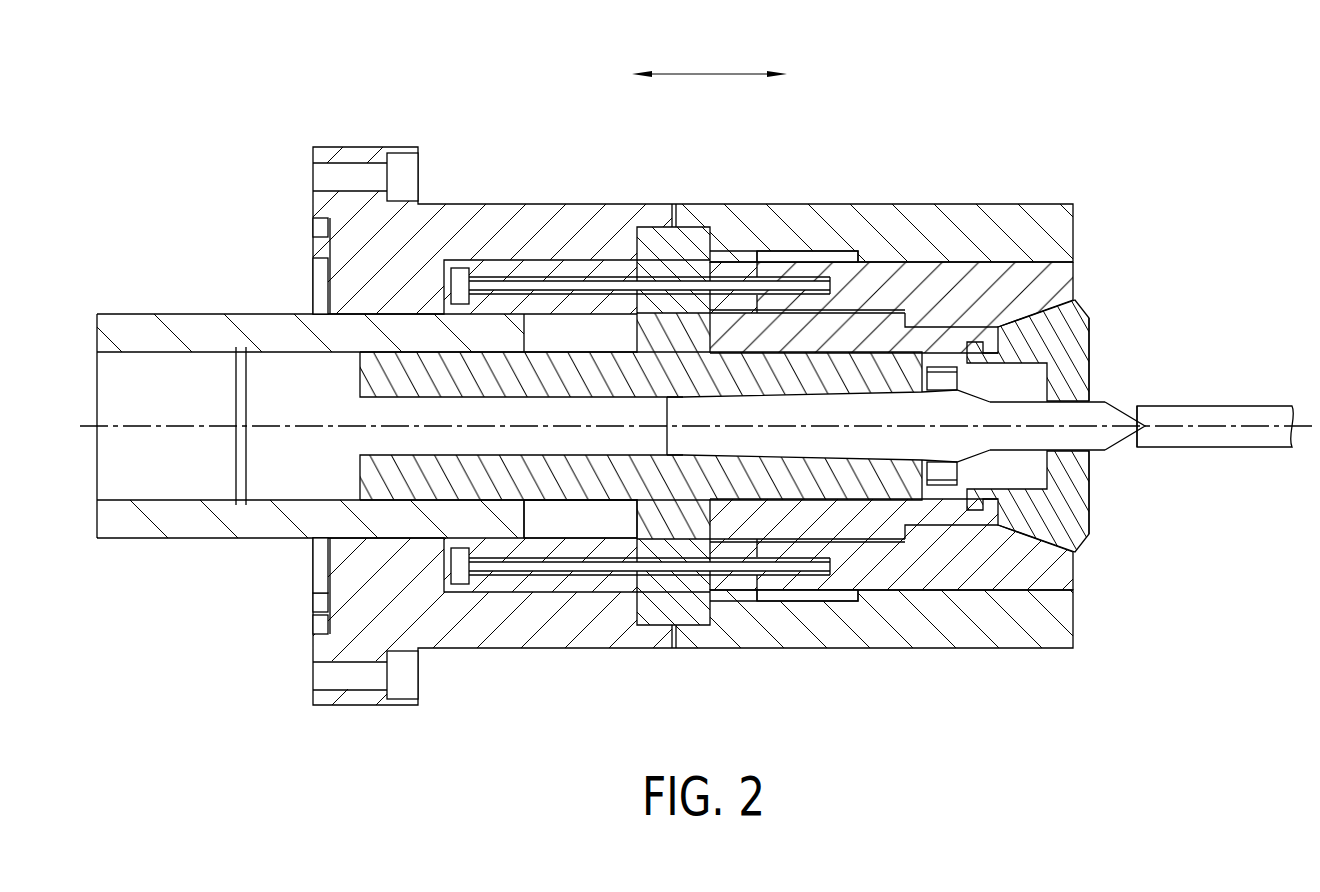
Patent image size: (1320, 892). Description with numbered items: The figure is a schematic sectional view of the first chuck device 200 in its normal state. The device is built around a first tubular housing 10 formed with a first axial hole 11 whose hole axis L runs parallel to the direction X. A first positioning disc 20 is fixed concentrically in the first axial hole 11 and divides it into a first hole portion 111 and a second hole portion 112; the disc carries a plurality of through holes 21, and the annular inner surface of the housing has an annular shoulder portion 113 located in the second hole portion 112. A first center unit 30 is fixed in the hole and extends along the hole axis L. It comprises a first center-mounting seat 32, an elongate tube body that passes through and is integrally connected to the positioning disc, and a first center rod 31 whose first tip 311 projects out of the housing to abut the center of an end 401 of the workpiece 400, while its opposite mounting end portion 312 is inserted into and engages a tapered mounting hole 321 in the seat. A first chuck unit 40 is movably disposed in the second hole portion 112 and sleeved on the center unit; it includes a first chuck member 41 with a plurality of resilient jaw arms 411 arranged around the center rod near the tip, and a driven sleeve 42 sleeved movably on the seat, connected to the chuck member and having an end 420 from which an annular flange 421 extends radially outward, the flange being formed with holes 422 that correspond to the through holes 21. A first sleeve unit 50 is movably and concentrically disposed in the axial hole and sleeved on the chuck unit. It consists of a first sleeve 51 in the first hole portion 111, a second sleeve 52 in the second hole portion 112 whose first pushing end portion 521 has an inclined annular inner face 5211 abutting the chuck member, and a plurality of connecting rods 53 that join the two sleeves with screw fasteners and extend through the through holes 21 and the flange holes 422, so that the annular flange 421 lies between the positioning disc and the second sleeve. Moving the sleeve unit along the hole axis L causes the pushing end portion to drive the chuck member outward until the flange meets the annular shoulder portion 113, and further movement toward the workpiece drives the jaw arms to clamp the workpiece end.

The first tubular housing 10 is at (1035, 203).
The first axial hole 11 is at (577, 255).
The first hole portion 111 is at (615, 258).
The second hole portion 112 is at (957, 262).
The annular shoulder portion 113 is at (863, 603).
The first positioning disc 20 is at (677, 237).
The through holes 21 is at (692, 250).
The first center unit 30 is at (1096, 397).
The first center rod 31 is at (975, 468).
The first tip 311 is at (1158, 417).
The mounting end portion 312 is at (827, 435).
The first center-mounting seat 32 is at (862, 352).
The tapered mounting hole 321 is at (913, 325).
The first chuck unit 40 is at (1086, 304).
The first chuck member 41 is at (1090, 512).
The resilient jaw arms 411 is at (1073, 343).
The driven sleeve 42 is at (877, 527).
The end 420 is at (690, 528).
The annular flange 421 is at (745, 268).
The holes 422 is at (725, 590).
The first sleeve unit 50 is at (1046, 277).
The first sleeve 51 is at (205, 330).
The second sleeve 52 is at (938, 277).
The first pushing end portion 521 is at (1065, 290).
The inclined annular inner face 5211 is at (1048, 543).
The connecting rods 53 is at (757, 257).
The first chuck device 200 is at (986, 132).
The workpiece 400 is at (1230, 447).
The end 401 is at (1158, 418).
The hole axis L is at (1262, 427).
The direction X is at (723, 72).